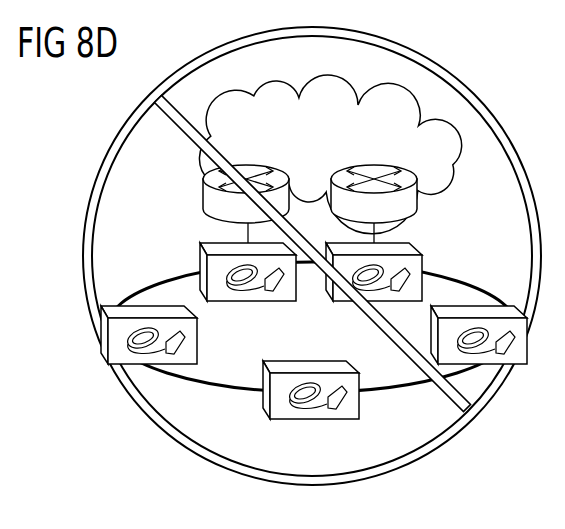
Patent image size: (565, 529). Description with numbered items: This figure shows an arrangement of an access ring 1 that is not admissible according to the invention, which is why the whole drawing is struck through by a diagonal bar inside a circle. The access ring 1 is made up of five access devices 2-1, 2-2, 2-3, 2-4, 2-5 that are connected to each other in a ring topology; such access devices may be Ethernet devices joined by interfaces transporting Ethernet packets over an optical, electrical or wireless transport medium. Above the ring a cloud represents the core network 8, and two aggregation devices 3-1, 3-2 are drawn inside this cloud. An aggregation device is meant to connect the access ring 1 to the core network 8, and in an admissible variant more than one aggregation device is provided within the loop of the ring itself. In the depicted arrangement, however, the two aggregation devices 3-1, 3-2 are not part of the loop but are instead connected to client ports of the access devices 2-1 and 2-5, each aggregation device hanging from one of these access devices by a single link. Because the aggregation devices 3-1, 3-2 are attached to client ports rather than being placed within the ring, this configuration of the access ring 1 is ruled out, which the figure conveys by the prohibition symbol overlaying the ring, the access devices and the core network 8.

The access ring 1 is at (223, 360).
The access device 2-1 is at (250, 302).
The access device 2-2 is at (127, 304).
The access device 2-3 is at (361, 404).
The access device 2-4 is at (494, 304).
The access device 2-5 is at (343, 302).
The aggregation device 3-1 is at (240, 163).
The aggregation device 3-2 is at (383, 163).
The core network 8 is at (451, 201).